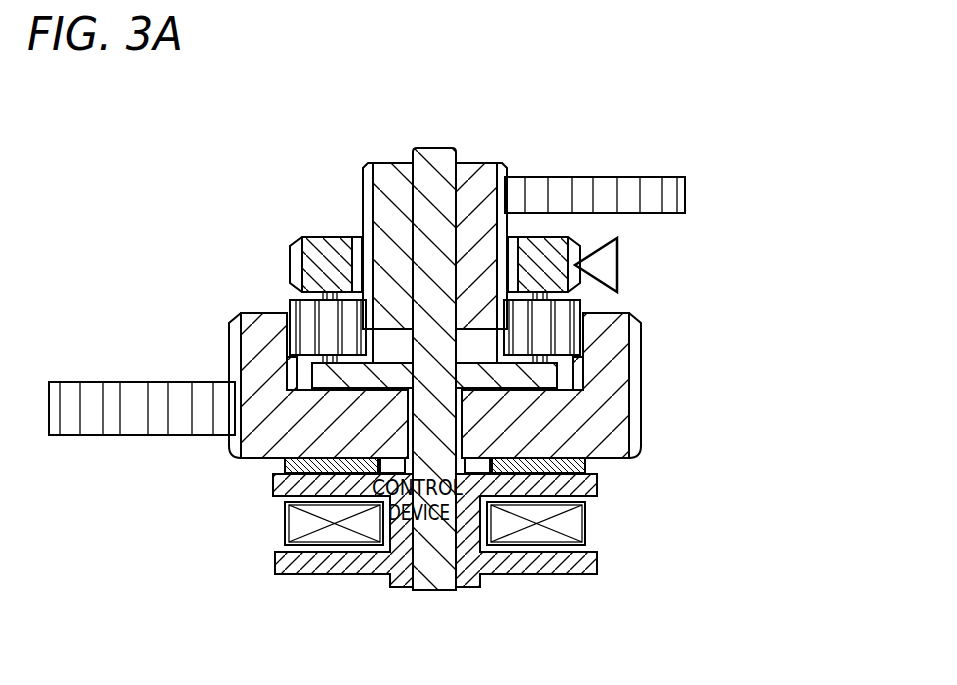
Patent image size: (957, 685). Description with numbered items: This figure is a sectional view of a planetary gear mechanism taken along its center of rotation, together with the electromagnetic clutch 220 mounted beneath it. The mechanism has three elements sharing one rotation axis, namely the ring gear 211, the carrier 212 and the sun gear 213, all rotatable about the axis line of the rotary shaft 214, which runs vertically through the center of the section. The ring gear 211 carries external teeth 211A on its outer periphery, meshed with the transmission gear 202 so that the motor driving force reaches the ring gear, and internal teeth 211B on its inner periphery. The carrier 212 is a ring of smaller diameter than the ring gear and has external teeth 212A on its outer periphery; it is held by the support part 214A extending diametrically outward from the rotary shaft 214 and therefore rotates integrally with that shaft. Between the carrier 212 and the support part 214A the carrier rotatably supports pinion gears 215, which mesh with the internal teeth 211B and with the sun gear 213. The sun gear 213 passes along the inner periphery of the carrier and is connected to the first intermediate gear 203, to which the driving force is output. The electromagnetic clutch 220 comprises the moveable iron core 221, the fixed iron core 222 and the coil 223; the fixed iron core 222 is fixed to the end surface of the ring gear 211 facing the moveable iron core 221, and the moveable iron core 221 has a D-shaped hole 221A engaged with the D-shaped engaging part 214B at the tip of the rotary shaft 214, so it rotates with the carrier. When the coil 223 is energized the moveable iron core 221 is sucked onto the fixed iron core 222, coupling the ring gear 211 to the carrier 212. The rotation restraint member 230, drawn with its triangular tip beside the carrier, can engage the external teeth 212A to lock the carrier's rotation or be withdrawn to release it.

The transmission gear 202 is at (127, 427).
The first intermediate gear 203 is at (667, 193).
The ring gear 211 is at (387, 350).
The external teeth 211A is at (233, 328).
The internal teeth 211B is at (290, 370).
The carrier 212 is at (508, 247).
The external teeth 212A is at (580, 283).
The sun gear 213 is at (472, 168).
The rotary shaft 214 is at (450, 363).
The support part 214A is at (345, 377).
The engaging part 214B is at (438, 575).
The pinion gear 215 is at (563, 333).
The electromagnetic clutch 220 is at (515, 539).
The moveable iron core 221 is at (485, 551).
The hole 221A is at (407, 587).
The fixed iron core 222 is at (585, 467).
The coil 223 is at (491, 527).
The rotation restraint member 230 is at (607, 265).